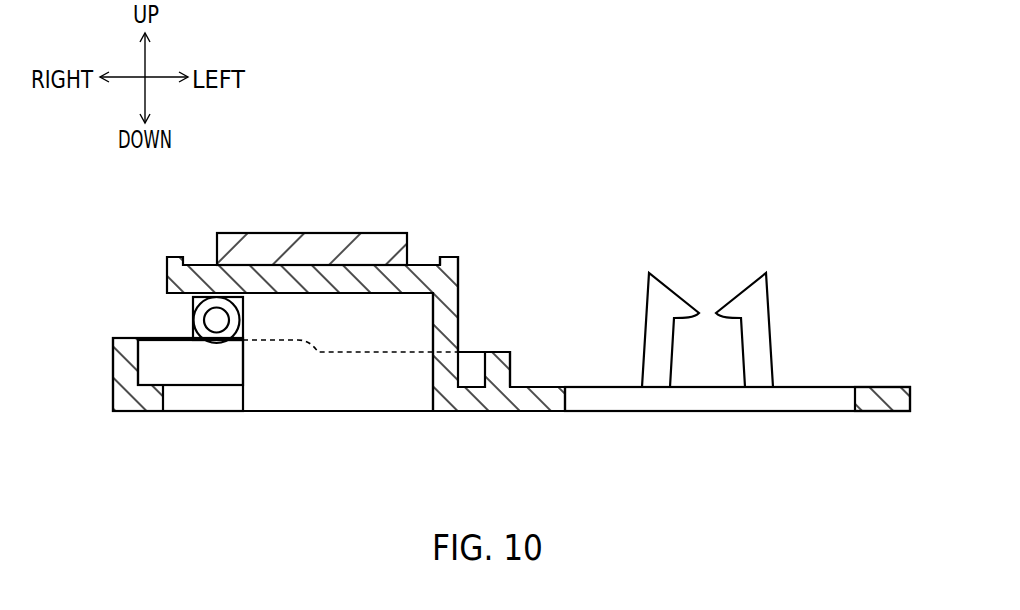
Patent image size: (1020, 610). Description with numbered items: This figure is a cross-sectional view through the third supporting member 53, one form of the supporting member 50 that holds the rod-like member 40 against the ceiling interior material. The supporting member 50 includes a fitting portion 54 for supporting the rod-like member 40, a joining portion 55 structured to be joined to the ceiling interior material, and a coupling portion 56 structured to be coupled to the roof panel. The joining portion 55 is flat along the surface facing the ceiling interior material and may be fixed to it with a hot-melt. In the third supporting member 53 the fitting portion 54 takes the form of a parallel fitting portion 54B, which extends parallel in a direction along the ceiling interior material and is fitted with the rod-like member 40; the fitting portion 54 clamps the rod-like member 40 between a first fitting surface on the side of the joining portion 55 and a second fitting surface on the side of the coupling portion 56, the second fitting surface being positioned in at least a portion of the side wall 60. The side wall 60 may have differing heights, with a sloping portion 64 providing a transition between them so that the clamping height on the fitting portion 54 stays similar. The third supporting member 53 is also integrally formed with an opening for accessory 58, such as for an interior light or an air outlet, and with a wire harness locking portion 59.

The rod-like member 40 is at (197, 322).
The supporting member 50 is at (485, 292).
The third supporting member 53 is at (448, 256).
The fitting portion 54 is at (313, 319).
The parallel fitting portion 54B is at (192, 303).
The joining portion 55 is at (360, 411).
The coupling portion 56 is at (302, 232).
The opening for accessory 58 is at (565, 398).
The wire harness locking portion 59 is at (745, 300).
The side wall 60 is at (190, 365).
The sloping portion 64 is at (312, 346).